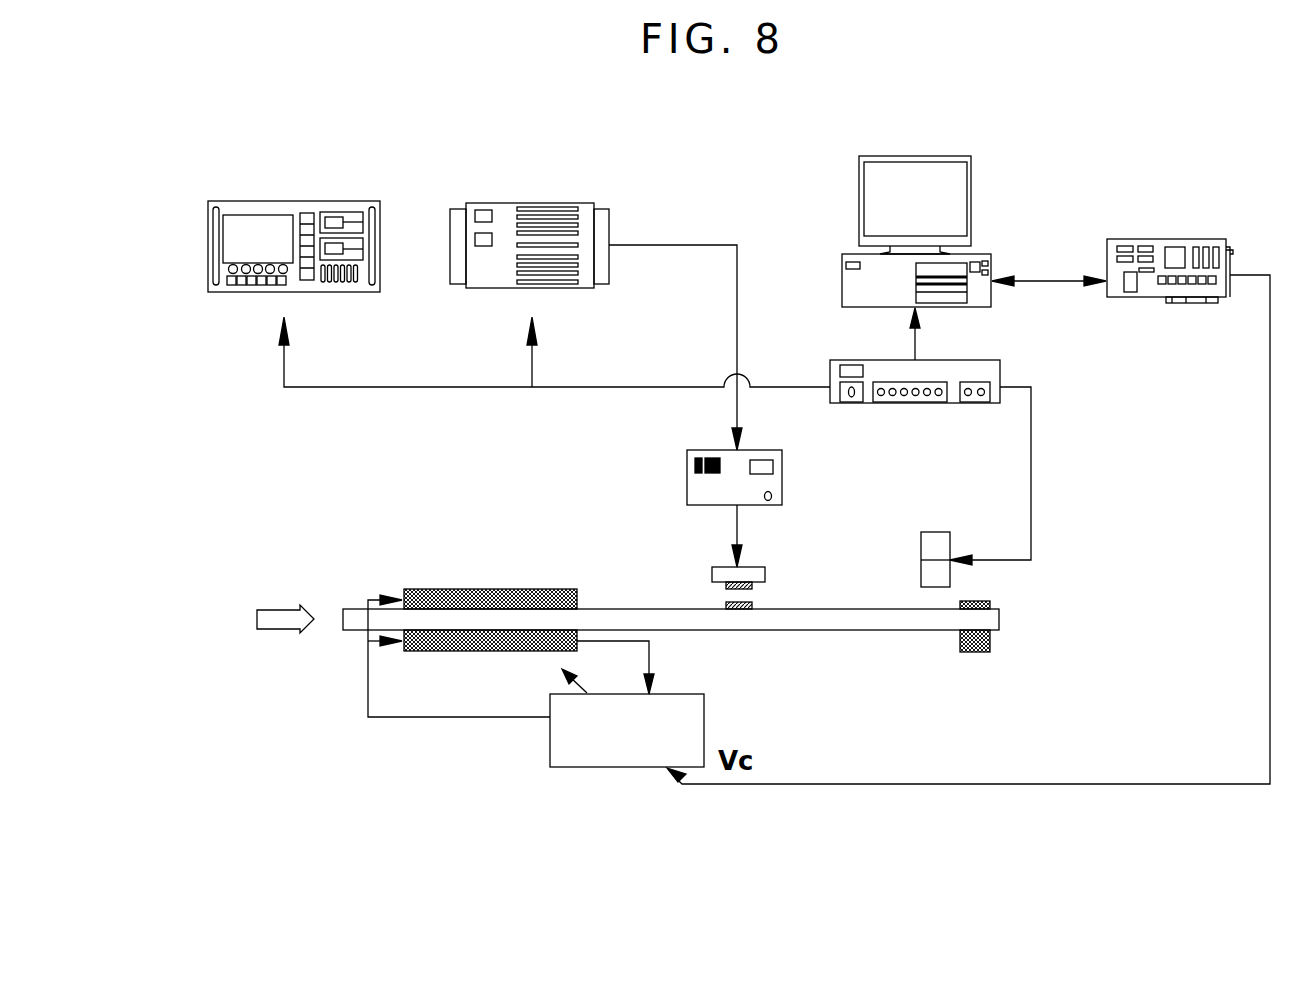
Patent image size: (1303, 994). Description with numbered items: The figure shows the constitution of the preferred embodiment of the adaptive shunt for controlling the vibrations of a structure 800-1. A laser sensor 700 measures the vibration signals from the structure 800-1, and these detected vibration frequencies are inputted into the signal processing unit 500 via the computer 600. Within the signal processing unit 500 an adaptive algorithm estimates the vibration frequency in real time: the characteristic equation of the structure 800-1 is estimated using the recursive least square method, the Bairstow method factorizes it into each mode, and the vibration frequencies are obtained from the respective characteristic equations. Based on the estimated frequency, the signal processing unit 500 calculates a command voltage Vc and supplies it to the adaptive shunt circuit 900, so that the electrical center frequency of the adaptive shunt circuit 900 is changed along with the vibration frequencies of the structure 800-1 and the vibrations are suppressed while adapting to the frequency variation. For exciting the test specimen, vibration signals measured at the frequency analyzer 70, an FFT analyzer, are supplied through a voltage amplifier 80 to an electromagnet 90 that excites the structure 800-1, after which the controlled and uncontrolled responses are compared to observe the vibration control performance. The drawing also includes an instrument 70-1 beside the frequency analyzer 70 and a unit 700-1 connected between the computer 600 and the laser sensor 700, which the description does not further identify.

The display unit 70-1 is at (318, 208).
The frequency analyzer 70 is at (600, 224).
The computer 600 is at (951, 187).
The signal processing unit 500 is at (1143, 290).
The controller 700-1 is at (993, 370).
The laser sensor 700 is at (940, 542).
The voltage amplifier 80 is at (696, 465).
The electromagnet 90 is at (722, 573).
The structure 800-1 is at (805, 631).
The adaptive shunt circuit 900 is at (641, 740).